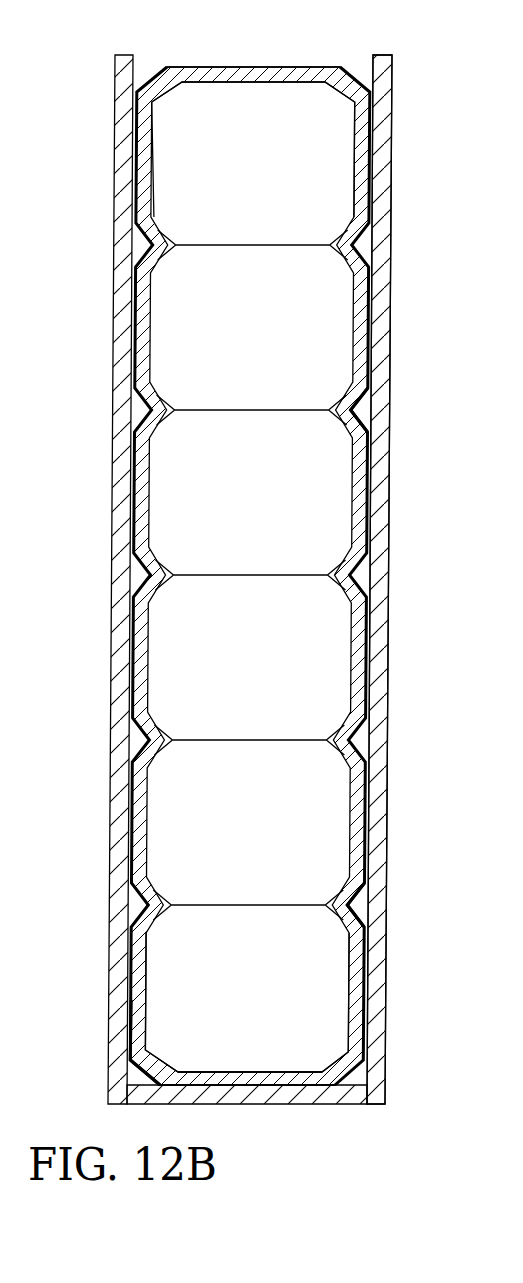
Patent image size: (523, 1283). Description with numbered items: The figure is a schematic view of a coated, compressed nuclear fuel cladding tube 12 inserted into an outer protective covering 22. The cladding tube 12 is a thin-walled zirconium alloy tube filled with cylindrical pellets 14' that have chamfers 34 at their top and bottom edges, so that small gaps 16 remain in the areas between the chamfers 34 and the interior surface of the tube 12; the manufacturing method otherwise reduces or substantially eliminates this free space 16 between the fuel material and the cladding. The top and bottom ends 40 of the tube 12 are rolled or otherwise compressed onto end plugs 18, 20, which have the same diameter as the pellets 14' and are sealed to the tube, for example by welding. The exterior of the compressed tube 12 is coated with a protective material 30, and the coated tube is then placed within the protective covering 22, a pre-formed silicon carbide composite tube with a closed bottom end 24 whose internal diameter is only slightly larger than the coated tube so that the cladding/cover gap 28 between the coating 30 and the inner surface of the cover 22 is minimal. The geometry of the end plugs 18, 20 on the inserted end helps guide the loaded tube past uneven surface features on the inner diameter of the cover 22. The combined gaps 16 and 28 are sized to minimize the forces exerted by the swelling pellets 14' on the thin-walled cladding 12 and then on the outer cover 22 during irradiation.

The cladding tube 12 is at (360, 137).
The cylindrical pellets 14' is at (293, 577).
The gaps 16 is at (162, 905).
The end plug 18 is at (262, 1080).
The end plug 20 is at (257, 67).
The protective covering 22 is at (381, 656).
The closed bottom end 24 is at (295, 1104).
The cladding/cover gap 28 is at (364, 414).
The protective material 30 is at (385, 182).
The chamfers 34 is at (357, 906).
The top and bottom ends 40 is at (157, 80).